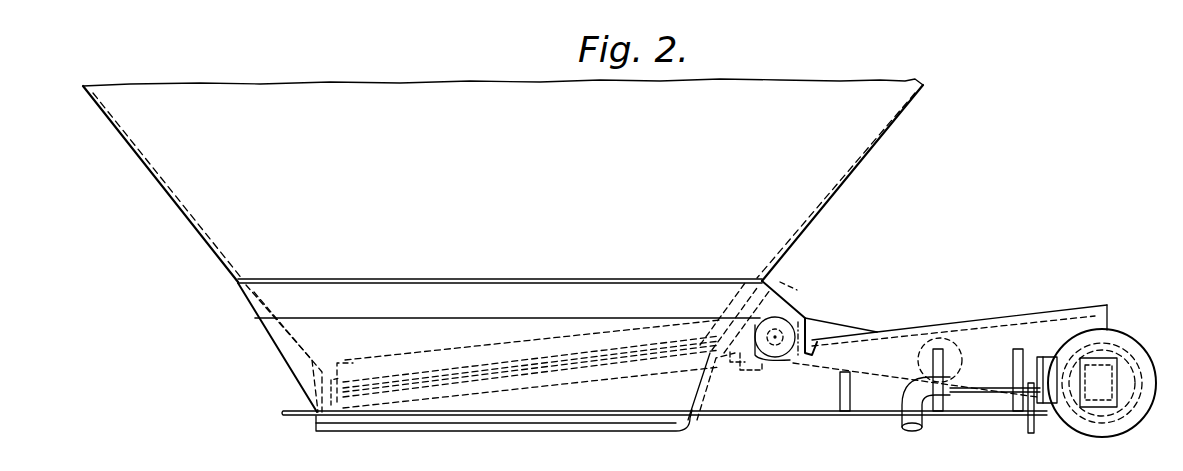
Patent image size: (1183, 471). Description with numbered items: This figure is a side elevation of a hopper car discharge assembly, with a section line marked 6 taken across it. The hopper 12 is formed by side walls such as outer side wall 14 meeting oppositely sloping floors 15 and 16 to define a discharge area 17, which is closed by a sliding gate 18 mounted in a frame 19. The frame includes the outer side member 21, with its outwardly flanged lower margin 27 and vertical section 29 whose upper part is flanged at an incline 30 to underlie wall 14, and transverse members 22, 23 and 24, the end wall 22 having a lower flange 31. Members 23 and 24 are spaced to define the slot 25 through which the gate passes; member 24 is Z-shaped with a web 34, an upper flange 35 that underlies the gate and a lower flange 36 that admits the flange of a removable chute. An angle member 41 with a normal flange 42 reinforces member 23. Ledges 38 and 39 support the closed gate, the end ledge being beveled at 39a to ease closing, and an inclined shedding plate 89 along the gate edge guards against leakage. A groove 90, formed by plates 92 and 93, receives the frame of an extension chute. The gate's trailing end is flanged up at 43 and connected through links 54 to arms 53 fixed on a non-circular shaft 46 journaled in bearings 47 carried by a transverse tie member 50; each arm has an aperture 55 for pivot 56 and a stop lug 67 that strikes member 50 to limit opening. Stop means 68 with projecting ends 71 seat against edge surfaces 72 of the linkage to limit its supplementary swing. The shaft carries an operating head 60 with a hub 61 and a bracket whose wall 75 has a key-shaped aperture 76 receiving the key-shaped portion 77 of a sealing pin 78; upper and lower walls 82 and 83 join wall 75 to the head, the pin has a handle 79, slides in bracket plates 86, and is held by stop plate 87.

The hopper 12 is at (190, 66).
The outer side wall 14 is at (517, 140).
The sloping floor 15 is at (178, 218).
The sloping floor 16 is at (838, 186).
The discharge area 17 is at (473, 268).
The sliding gate 18 is at (400, 382).
The frame 19 is at (230, 292).
The outer longitudinally extending side member 21 is at (561, 279).
The transversely extending end wall 22 is at (280, 338).
The upper transversely extending wall 23 is at (748, 290).
The lower transversely extending wall 24 is at (688, 434).
The slot 25 is at (720, 340).
The outwardly flanged lower margin 27 is at (617, 412).
The vertically extending section 29 is at (360, 332).
The inclined outward flange 30 is at (590, 298).
The outwardly extending flange 31 is at (295, 418).
The web portion 34 is at (688, 390).
The upper flange 35 is at (738, 373).
The lower flange 36 is at (665, 425).
The ledge 38 is at (465, 392).
The end ledge 39 is at (331, 405).
The bevel 39a is at (340, 371).
The angle shaped member 41 is at (770, 300).
The flange 42 is at (802, 312).
The upwardly flanged trailing end 43 is at (783, 318).
The rotatable shaft 46 is at (1118, 360).
The bearings 47 is at (1118, 366).
The angle tie member 50 is at (1018, 412).
The arm 53 is at (993, 335).
The links 54 is at (848, 321).
The aperture 55 is at (938, 345).
The pivot 56 is at (940, 352).
The operating head 60 is at (1125, 433).
The hub portion 61 is at (1115, 380).
The stop lug 67 is at (1115, 340).
The stop means 68 is at (756, 370).
The projecting ends 71 is at (1030, 388).
The edge surfaces 72 is at (783, 358).
The wall 75 is at (1008, 398).
The key-shaped aperture 76 is at (1010, 400).
The key-shaped portion 77 is at (1063, 420).
The sealing pin 78 is at (905, 382).
The handle portion 79 is at (912, 432).
The upper wall 82 is at (1047, 360).
The lower wall 83 is at (1032, 398).
The bracket plates 86 is at (945, 392).
The stop plate 87 is at (850, 400).
The inclined shedding plate 89 is at (450, 360).
The groove 90 is at (557, 420).
The plate 92 is at (500, 420).
The plate 93 is at (530, 425).
The section line 6- 6 is at (717, 265).